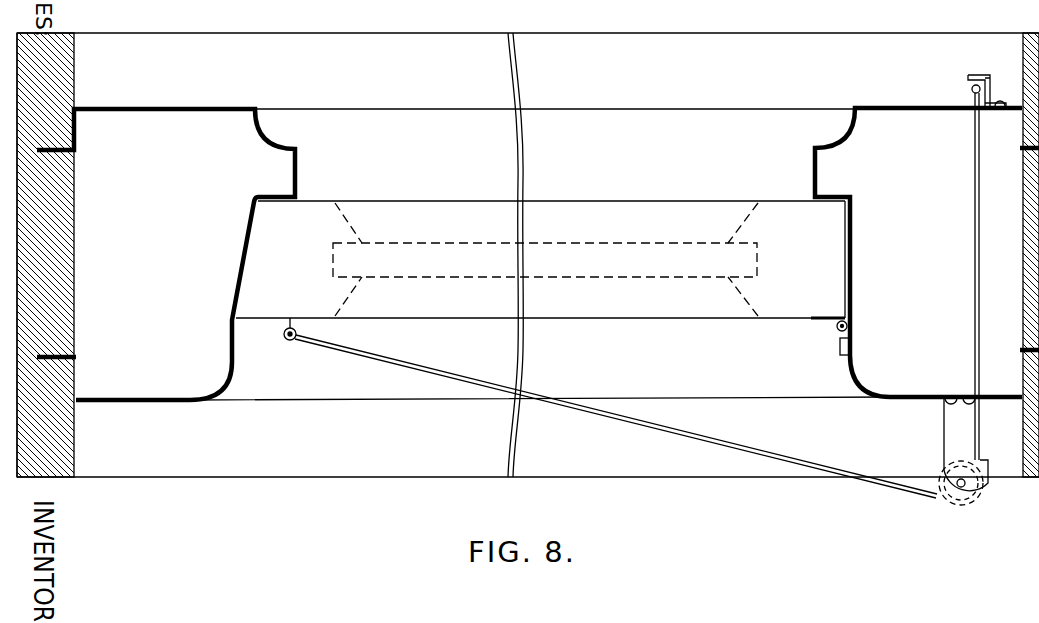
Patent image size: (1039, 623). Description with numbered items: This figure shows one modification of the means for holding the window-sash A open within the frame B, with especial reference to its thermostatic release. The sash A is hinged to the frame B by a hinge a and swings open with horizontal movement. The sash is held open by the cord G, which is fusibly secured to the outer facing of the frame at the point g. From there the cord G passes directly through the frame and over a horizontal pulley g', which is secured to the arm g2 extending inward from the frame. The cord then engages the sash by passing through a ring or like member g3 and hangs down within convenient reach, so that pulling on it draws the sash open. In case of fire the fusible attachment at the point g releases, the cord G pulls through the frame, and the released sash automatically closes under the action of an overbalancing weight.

The window-sash A is at (772, 319).
The hinge a is at (838, 331).
The frame B is at (106, 424).
The cord G is at (688, 434).
The fusible securing point g is at (965, 267).
The horizontal pulley g' is at (939, 496).
The arm g2 is at (955, 440).
The ring g3 is at (291, 342).